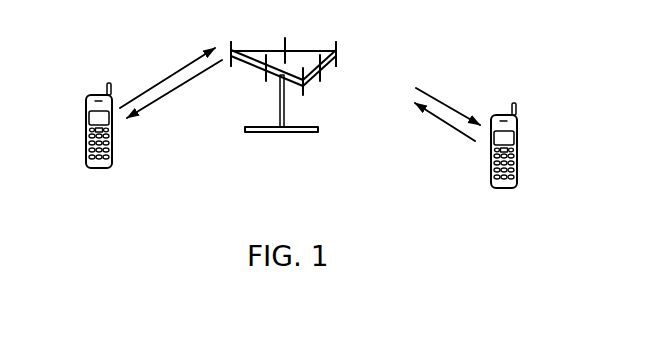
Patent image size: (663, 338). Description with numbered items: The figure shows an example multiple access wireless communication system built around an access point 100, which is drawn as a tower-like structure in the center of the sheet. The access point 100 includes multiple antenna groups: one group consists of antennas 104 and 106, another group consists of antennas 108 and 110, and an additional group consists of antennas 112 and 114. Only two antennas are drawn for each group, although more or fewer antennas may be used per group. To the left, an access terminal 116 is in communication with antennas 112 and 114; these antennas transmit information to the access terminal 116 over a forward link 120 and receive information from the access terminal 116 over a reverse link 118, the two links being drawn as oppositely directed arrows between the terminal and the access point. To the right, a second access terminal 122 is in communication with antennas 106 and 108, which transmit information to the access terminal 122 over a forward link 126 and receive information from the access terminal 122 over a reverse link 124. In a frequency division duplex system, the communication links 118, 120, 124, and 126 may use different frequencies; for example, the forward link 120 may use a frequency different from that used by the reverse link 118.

The access point 100 is at (288, 132).
The antenna 104 is at (304, 92).
The antenna 106 is at (321, 74).
The antenna 108 is at (337, 58).
The antenna 110 is at (286, 39).
The antenna 112 is at (231, 43).
The antenna 114 is at (266, 76).
The access terminal 116 is at (85, 115).
The reverse link 118 is at (174, 72).
The forward link 120 is at (165, 95).
The access terminal 122 is at (518, 136).
The reverse link 124 is at (450, 126).
The forward link 126 is at (445, 104).